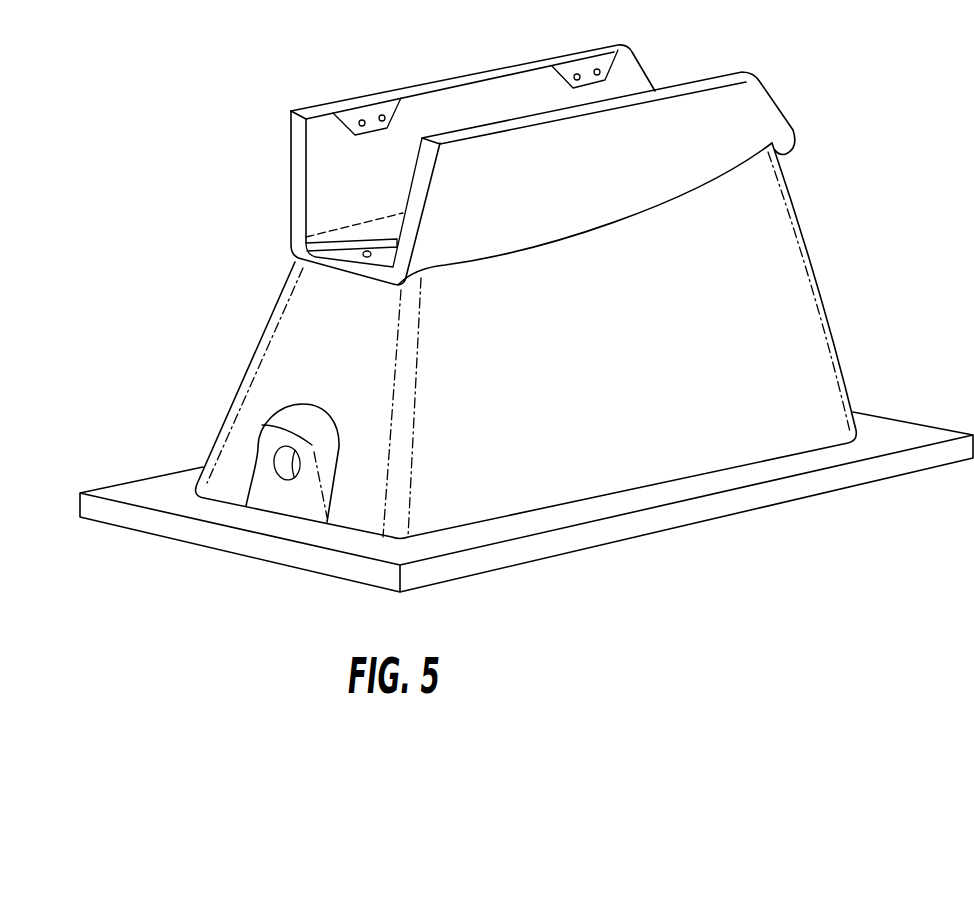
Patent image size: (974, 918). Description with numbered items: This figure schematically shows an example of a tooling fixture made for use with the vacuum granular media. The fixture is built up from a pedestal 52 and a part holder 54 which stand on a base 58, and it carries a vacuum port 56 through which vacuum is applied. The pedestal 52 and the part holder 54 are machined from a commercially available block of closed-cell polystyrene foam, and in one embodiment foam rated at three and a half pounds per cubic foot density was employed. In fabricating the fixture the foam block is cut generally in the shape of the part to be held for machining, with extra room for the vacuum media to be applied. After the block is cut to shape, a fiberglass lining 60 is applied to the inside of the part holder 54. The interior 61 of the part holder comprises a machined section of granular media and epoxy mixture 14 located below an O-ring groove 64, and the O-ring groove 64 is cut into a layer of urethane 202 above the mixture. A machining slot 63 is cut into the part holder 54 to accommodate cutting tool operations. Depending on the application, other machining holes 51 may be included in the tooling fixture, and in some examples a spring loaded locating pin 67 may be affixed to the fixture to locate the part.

The granular media and epoxy mixture 14 is at (573, 90).
The machining holes 51 is at (385, 117).
The pedestal 52 is at (614, 369).
The part holder 54 is at (573, 201).
The vacuum port 56 is at (283, 472).
The base 58 is at (532, 562).
The fiberglass lining 60 is at (467, 75).
The interior 61 is at (327, 172).
The machining slot 63 is at (312, 236).
The O-ring groove 64 is at (518, 65).
The spring loaded locating pin 67 is at (370, 256).
The layer of urethane 202 is at (345, 83).